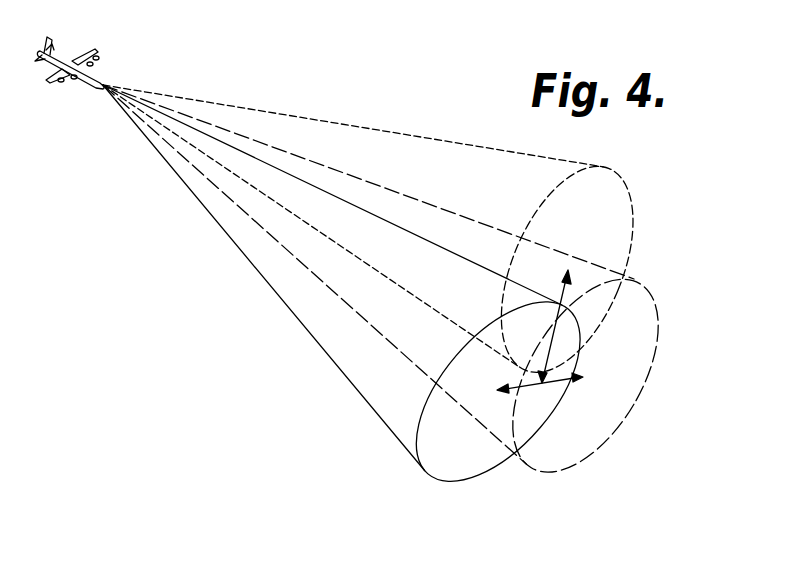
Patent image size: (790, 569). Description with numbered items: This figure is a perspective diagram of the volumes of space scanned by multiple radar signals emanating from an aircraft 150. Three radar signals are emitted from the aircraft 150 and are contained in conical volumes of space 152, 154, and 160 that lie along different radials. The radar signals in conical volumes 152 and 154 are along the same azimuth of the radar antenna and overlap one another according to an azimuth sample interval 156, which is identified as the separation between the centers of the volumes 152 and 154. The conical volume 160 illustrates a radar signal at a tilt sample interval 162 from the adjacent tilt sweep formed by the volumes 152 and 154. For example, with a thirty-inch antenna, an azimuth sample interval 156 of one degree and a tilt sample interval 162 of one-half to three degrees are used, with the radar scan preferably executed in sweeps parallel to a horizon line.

The aircraft 150 is at (68, 58).
The conical volume of space 152 is at (357, 306).
The conical volume of space 154 is at (656, 309).
The azimuth sample interval 156 is at (542, 388).
The conical volume of space 160 is at (631, 202).
The tilt sample interval 162 is at (550, 346).